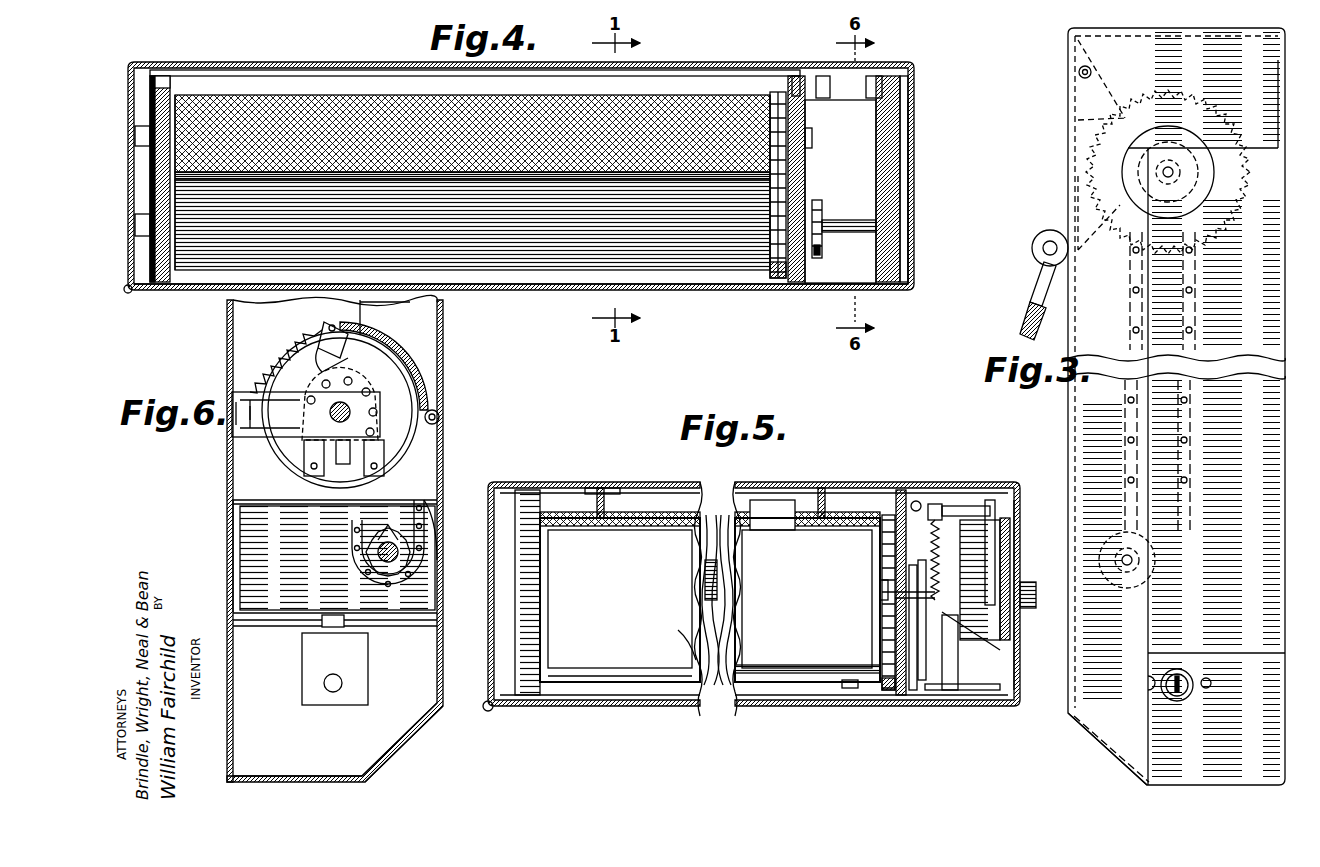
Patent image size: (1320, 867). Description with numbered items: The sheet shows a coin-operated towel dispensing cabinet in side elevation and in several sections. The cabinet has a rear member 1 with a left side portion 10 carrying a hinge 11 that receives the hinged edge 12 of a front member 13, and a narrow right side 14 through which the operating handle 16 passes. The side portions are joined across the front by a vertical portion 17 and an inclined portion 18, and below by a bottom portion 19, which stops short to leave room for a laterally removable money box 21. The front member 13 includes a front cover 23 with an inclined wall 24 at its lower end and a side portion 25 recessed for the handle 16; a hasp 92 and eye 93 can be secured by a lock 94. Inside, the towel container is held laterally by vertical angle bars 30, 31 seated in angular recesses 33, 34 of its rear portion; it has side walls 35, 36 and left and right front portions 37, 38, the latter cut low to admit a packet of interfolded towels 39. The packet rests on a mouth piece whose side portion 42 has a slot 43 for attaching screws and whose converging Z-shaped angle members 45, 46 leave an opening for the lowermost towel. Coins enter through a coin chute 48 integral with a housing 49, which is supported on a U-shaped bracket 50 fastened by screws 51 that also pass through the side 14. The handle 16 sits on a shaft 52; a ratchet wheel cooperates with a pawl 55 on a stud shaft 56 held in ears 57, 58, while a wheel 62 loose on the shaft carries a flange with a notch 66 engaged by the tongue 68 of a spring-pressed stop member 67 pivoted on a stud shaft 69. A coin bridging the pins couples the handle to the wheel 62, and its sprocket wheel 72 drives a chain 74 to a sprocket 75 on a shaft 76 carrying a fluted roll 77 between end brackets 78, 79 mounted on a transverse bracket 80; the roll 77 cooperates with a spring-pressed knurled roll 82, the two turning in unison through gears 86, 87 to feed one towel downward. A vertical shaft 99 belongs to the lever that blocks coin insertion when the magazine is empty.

In FIG. 4, the rear member 1 is at (346, 62).
In FIG. 6, the rear member 1 is at (226, 362).
In FIG. 5, the rear member 1 is at (740, 482).
In FIG. 4, the left side portion 10 is at (132, 150).
In FIG. 5, the left side portion 10 is at (490, 568).
In FIG. 5, the hinge 11 is at (494, 710).
In FIG. 4, the hinged edge 12 is at (130, 292).
In FIG. 4, the front member 13 is at (558, 292).
In FIG. 4, the narrow right side 14 is at (912, 114).
In FIG. 6, the narrow right side 14 is at (255, 332).
In FIG. 5, the narrow right side 14 is at (1016, 548).
In FIG. 3, the narrow right side 14 is at (1224, 386).
In FIG. 5, the operating handle 16 is at (1026, 588).
In FIG. 3, the operating handle 16 is at (1145, 135).
In FIG. 6, the vertical portion 17 is at (440, 662).
In FIG. 5, the vertical portion 17 is at (848, 692).
In FIG. 6, the inclined portion 18 is at (428, 724).
In FIG. 6, the bottom portion 19 is at (290, 782).
In FIG. 6, the money box 21 is at (385, 716).
In FIG. 3, the money box 21 is at (1216, 706).
In FIG. 5, the front cover 23 is at (652, 702).
In FIG. 6, the inclined wall 24 is at (398, 762).
In FIG. 3, the inclined wall 24 is at (1112, 762).
In FIG. 4, the side portion 25 is at (914, 270).
In FIG. 5, the side portion 25 is at (1018, 664).
In FIG. 3, the side portion 25 is at (1082, 452).
In FIG. 5, the vertical angle bar 30 is at (602, 490).
In FIG. 5, the vertical angle bar 31 is at (838, 520).
In FIG. 5, the angular recess 33 is at (594, 510).
In FIG. 5, the angular recess 34 is at (765, 516).
In FIG. 5, the side wall 35 is at (556, 684).
In FIG. 5, the side wall 36 is at (870, 652).
In FIG. 5, the left front portion 37 is at (556, 686).
In FIG. 5, the right front portion 38 is at (850, 690).
In FIG. 5, the packet of interfolded paper towels 39 is at (716, 686).
In FIG. 5, the side portion 42 is at (548, 596).
In FIG. 5, the slot 43 is at (878, 590).
In FIG. 5, the Z-shaped angle member 45 is at (722, 530).
In FIG. 5, the Z-shaped angle member 46 is at (700, 682).
In FIG. 6, the coin chute 48 is at (406, 332).
In FIG. 5, the coin chute 48 is at (958, 650).
In FIG. 6, the housing 49 is at (337, 558).
In FIG. 6, the U-shaped bracket 50 is at (258, 430).
In FIG. 5, the U-shaped bracket 50 is at (904, 500).
In FIG. 6, the screw 51 is at (270, 400).
In FIG. 6, the shaft 52 is at (332, 418).
In FIG. 5, the pawl 55 is at (1012, 512).
In FIG. 5, the stud shaft 56 is at (960, 506).
In FIG. 5, the ear 57 is at (940, 504).
In FIG. 5, the ear 58 is at (990, 520).
In FIG. 6, the wheel 62 is at (400, 392).
In FIG. 6, the notch 66 is at (288, 372).
In FIG. 6, the stop member 67 is at (412, 362).
In FIG. 5, the stop member 67 is at (921, 682).
In FIG. 6, the tongue 68 is at (330, 326).
In FIG. 5, the tongue 68 is at (892, 598).
In FIG. 6, the stud shaft 69 is at (440, 416).
In FIG. 5, the stud shaft 69 is at (970, 692).
In FIG. 6, the sprocket wheel 72 is at (344, 458).
In FIG. 4, the chain 74 is at (822, 206).
In FIG. 6, the chain 74 is at (312, 462).
In FIG. 5, the chain 74 is at (912, 668).
In FIG. 3, the chain 74 is at (1180, 392).
In FIG. 4, the sprocket 75 is at (822, 248).
In FIG. 6, the sprocket 75 is at (390, 528).
In FIG. 3, the sprocket 75 is at (1135, 575).
In FIG. 4, the shaft 76 is at (840, 228).
In FIG. 6, the shaft 76 is at (384, 554).
In FIG. 4, the fluted roll 77 is at (706, 256).
In FIG. 5, the fluted roll 77 is at (738, 682).
In FIG. 4, the end bracket 78 is at (158, 92).
In FIG. 4, the end bracket 79 is at (800, 118).
In FIG. 6, the end bracket 79 is at (430, 588).
In FIG. 6, the transverse bracket 80 is at (236, 522).
In FIG. 4, the knurled roll 82 is at (680, 118).
In FIG. 5, the knurled roll 82 is at (636, 518).
In FIG. 4, the gear 86 is at (780, 280).
In FIG. 5, the gear 86 is at (888, 690).
In FIG. 4, the gear 87 is at (778, 92).
In FIG. 5, the gear 87 is at (888, 514).
In FIG. 3, the hasp 92 is at (1050, 232).
In FIG. 3, the eye 93 is at (1040, 270).
In FIG. 3, the lock 94 is at (1032, 318).
In FIG. 5, the vertical shaft 99 is at (920, 504).